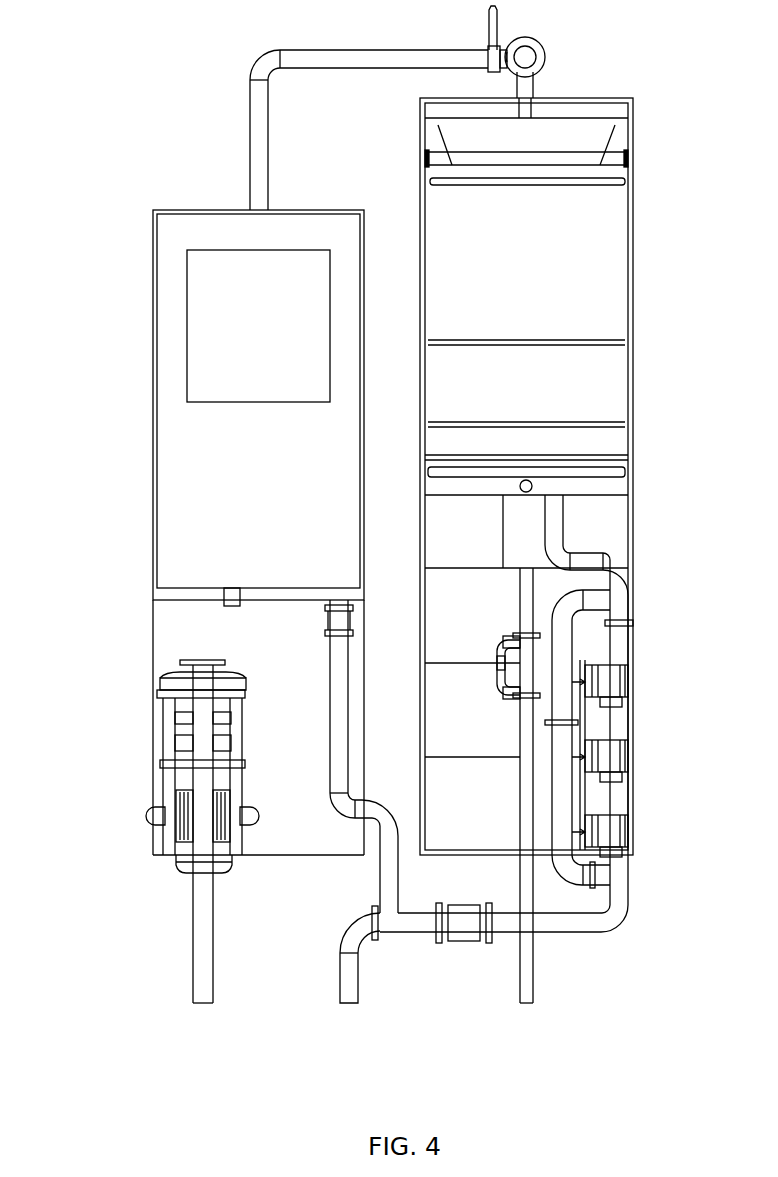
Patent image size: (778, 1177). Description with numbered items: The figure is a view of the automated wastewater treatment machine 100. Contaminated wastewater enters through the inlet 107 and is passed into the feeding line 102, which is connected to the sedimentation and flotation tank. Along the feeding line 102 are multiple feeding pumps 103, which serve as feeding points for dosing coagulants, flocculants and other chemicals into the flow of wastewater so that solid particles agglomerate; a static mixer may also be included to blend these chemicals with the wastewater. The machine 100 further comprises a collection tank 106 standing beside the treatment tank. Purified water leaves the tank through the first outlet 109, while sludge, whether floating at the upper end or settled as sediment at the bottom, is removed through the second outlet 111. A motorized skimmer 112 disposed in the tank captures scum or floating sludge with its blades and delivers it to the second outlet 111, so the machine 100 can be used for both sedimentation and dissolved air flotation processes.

The machine 100 is at (142, 112).
The feeding line 102 is at (620, 598).
The feeding pumps 103 is at (615, 688).
The collection tank 106 is at (190, 505).
The inlet 107 is at (352, 1000).
The first outlet 109 is at (213, 1002).
The second outlet 111 is at (530, 1000).
The motorized skimmer 112 is at (600, 312).